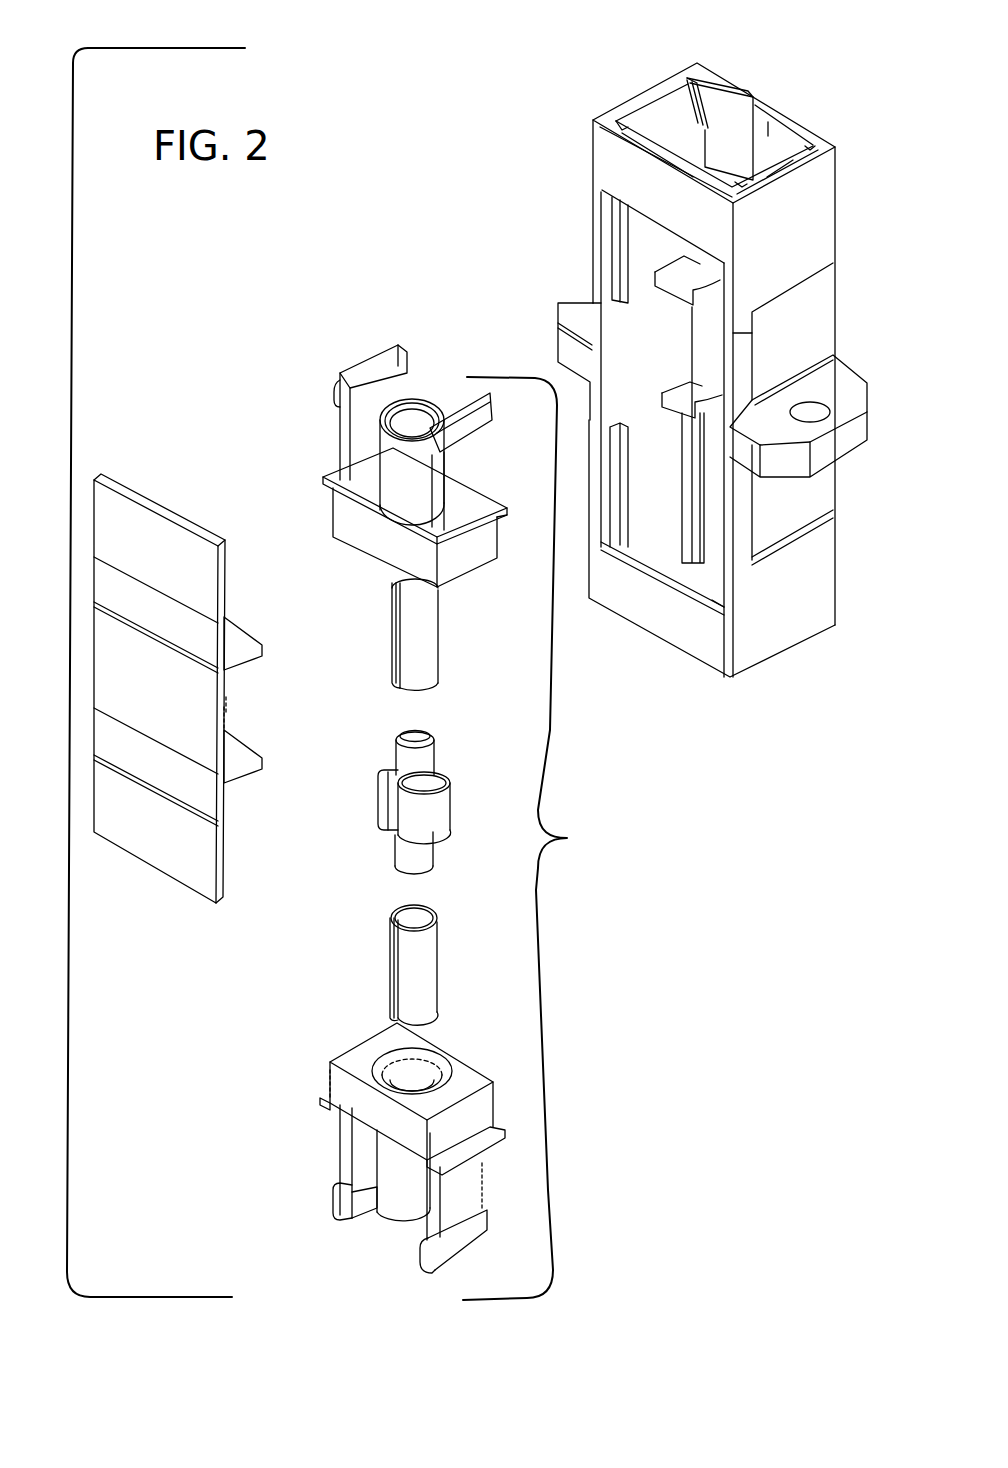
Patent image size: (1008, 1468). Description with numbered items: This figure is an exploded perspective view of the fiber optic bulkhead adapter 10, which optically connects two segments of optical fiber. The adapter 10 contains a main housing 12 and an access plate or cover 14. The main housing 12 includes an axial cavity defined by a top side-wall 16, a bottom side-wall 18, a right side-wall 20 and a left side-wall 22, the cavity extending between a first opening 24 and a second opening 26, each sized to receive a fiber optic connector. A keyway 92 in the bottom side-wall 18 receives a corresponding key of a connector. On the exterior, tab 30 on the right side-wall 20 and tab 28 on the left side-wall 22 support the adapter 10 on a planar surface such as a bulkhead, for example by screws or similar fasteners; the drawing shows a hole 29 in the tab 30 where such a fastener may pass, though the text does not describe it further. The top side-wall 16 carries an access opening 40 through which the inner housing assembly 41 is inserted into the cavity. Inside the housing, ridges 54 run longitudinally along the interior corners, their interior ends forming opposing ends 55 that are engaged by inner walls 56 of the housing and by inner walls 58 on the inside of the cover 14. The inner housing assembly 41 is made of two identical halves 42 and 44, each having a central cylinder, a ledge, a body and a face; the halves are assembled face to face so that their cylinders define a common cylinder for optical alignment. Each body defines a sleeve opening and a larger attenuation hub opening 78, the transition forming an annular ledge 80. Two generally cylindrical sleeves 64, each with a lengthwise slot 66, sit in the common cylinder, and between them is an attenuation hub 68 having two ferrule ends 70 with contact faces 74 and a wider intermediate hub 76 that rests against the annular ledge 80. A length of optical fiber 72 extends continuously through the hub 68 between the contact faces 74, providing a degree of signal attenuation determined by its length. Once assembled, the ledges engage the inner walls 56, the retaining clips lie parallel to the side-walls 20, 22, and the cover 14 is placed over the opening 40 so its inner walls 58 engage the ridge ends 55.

The adapter 10 is at (70, 663).
The main housing 12 is at (679, 370).
The cover 14 is at (199, 662).
The top side-wall 16 is at (686, 640).
The bottom side-wall 18 is at (720, 103).
The right side-wall 20 is at (793, 250).
The left side-wall 22 is at (646, 111).
The first opening 24 is at (673, 47).
The second opening 26 is at (629, 670).
The tab 28 is at (572, 350).
The mounting hole 29 is at (822, 401).
The tab 30 is at (811, 410).
The access opening 40 is at (710, 617).
The inner housing assembly 41 is at (381, 742).
The inner housing half 42 is at (380, 397).
The inner housing half 44 is at (353, 1135).
The ridges 54 is at (697, 85).
The opposing ends 55 is at (595, 281).
The inner walls 56 is at (675, 288).
The inner walls 58 is at (258, 645).
The sleeve 64 is at (418, 802).
The slot 66 is at (397, 662).
The attenuation hub 68 is at (430, 796).
The ferrule end 70 is at (422, 762).
The optical fiber 72 is at (418, 734).
The contact face 74 is at (410, 736).
The intermediate hub 76 is at (383, 790).
The attenuation hub opening 78 is at (375, 1063).
The annular ledge 80 is at (403, 1075).
The keyway 92 is at (757, 117).